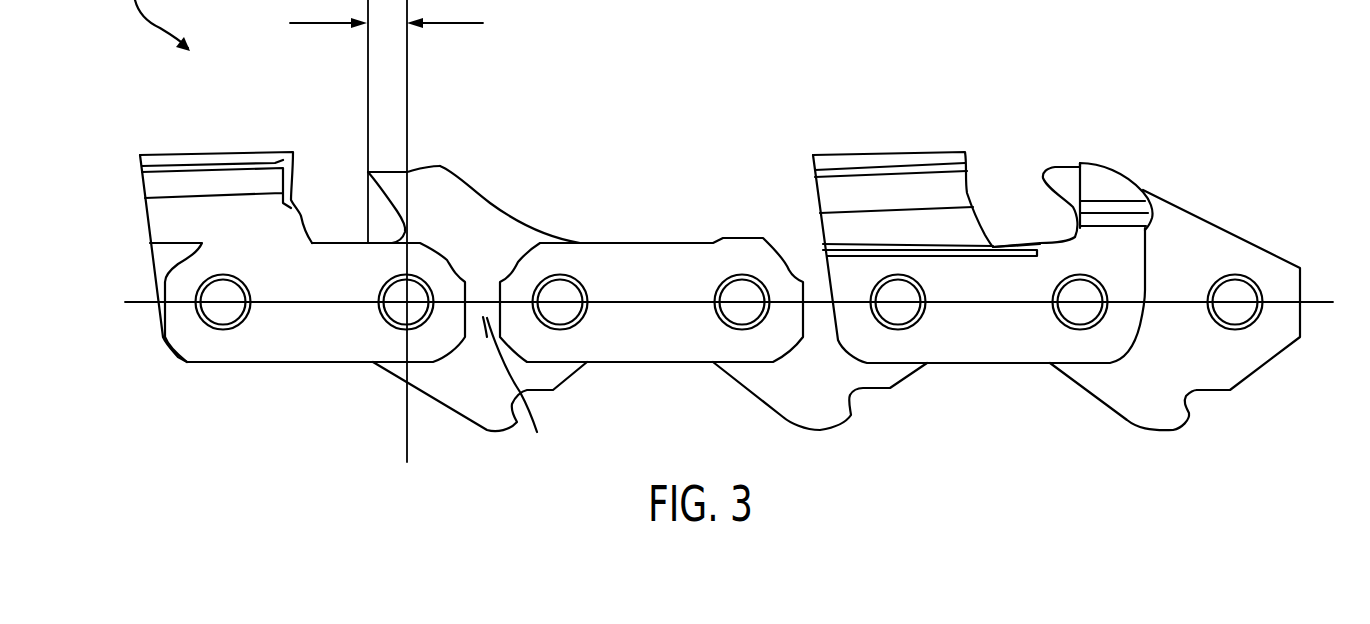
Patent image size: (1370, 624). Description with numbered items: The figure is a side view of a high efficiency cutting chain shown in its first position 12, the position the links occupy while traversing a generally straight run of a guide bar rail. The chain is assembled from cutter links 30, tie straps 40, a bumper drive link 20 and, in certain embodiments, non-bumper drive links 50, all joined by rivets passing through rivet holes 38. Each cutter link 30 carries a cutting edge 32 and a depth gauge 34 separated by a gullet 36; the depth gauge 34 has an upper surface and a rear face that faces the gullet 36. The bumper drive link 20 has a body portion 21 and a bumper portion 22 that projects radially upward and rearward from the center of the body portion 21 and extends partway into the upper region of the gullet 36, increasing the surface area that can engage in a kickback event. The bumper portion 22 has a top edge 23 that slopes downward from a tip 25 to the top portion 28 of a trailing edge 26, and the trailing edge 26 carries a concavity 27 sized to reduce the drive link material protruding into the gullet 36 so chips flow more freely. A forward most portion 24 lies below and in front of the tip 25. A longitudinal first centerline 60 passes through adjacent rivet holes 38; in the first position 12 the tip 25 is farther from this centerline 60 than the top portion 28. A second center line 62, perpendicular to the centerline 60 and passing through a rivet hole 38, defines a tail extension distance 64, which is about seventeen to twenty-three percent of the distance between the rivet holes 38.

The first position 12 is at (1236, 418).
The bumper drive link 20 is at (482, 338).
The body portion 21 is at (517, 390).
The bumper portion 22 is at (397, 187).
The top edge 23 is at (368, 172).
The forward most portion 24 is at (503, 202).
The tip 25 is at (440, 165).
The trailing edge 26 is at (388, 206).
The concavity 27 is at (397, 224).
The top portion 28 is at (370, 174).
The cutter link 30 is at (170, 220).
The cutting edge 32 is at (282, 157).
The depth gauge 34 is at (1112, 182).
The gullet 36 is at (993, 245).
The rivet holes 38 is at (407, 290).
The tie straps 40 is at (655, 318).
The non-bumper drive links 50 is at (803, 370).
The longitudinal first centerline 60 is at (1317, 300).
The second center line 62 is at (408, 76).
The tail extension distance 64 is at (320, 24).